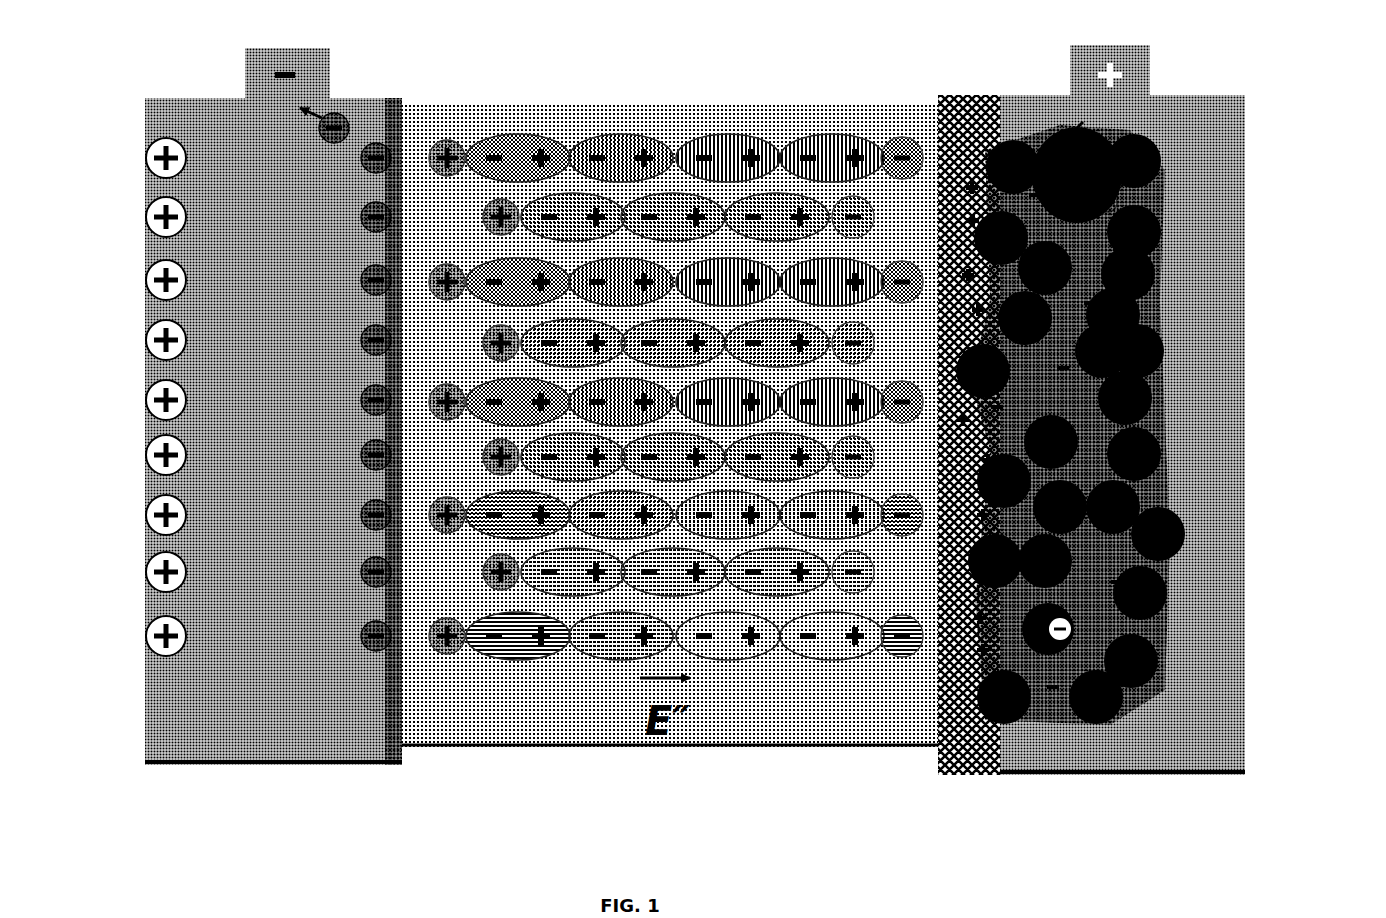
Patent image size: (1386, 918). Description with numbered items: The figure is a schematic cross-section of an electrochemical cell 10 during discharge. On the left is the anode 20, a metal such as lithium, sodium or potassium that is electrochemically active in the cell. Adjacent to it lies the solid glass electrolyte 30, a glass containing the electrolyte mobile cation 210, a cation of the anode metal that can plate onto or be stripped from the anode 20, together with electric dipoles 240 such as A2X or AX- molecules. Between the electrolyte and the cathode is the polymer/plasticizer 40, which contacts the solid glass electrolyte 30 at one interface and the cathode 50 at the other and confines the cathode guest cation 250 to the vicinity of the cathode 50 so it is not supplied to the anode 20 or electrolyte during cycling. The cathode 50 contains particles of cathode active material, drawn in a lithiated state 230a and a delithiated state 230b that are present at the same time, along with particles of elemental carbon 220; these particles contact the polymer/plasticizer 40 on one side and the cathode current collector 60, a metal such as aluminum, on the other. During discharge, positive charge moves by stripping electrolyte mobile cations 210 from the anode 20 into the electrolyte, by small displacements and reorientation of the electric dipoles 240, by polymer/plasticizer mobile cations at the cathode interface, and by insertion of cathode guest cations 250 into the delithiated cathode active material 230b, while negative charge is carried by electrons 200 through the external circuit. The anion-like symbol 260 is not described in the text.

The electrochemical cell 10 is at (694, 88).
The anode 20 is at (218, 124).
The solid glass electrolyte 30 is at (603, 124).
The polymer/plasticizer 40 is at (963, 113).
The cathode 50 is at (978, 778).
The cathode current collector 60 is at (1198, 124).
The electron 200 is at (375, 652).
The electrolyte mobile cation 210 is at (449, 656).
The elemental carbon 220 is at (1163, 450).
The cathode active material in lithiated state 230a is at (1092, 596).
The cathode active material in delithiated state 230b is at (1102, 636).
The electric dipole 240 is at (734, 653).
The cathode guest cation 250 is at (968, 662).
The anion 260 is at (892, 654).